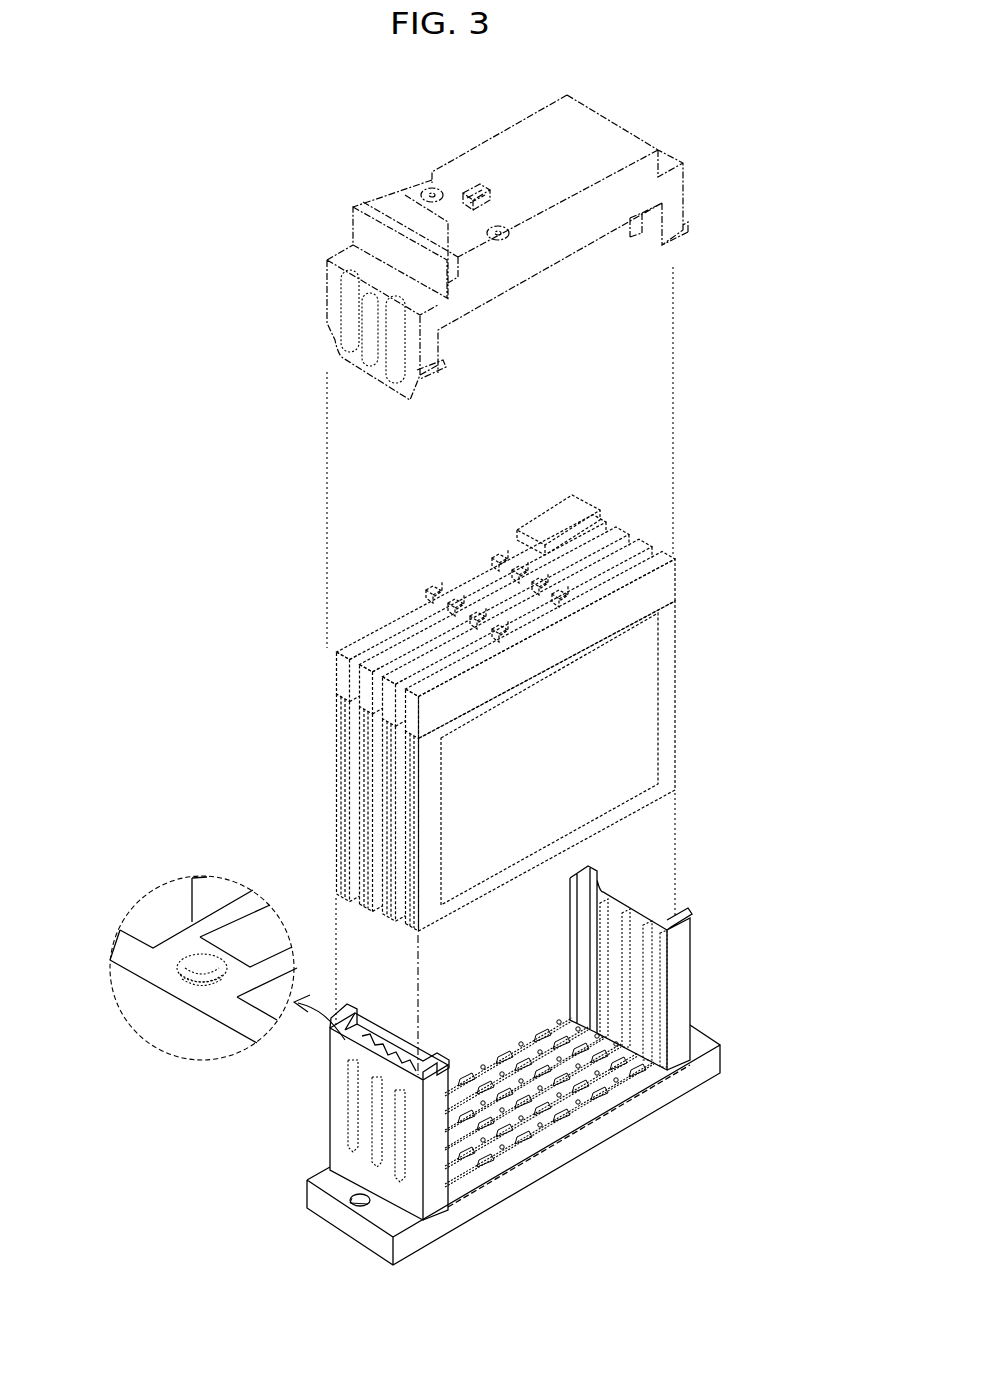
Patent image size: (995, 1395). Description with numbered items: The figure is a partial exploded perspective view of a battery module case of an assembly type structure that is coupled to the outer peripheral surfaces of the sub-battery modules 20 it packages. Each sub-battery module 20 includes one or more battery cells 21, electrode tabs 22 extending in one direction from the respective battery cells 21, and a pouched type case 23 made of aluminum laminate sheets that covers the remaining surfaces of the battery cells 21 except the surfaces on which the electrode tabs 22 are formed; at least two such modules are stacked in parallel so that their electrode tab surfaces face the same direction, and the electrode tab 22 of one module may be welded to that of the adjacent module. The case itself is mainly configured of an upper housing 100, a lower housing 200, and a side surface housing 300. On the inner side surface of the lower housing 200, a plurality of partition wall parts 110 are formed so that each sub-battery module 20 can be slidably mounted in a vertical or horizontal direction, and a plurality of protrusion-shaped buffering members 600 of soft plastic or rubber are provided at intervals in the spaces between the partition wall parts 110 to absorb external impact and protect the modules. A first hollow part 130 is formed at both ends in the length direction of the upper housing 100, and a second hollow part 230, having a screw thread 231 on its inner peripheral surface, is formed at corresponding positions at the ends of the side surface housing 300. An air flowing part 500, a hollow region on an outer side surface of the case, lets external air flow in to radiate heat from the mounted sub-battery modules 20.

The upper housing 100 is at (330, 270).
The first hollow part 130 is at (335, 347).
The sub-battery module 20 is at (591, 698).
The battery cell 21 is at (653, 587).
The electrode tab 22 is at (640, 513).
The pouched type case 23 is at (670, 680).
The partition wall part 110 is at (643, 900).
The side surface housing 300 is at (677, 985).
The lower housing 200 is at (340, 1153).
The air flowing part 500 is at (350, 1093).
The buffering member 600 is at (603, 1100).
The second hollow part 230 is at (200, 955).
The screw thread 231 is at (178, 971).